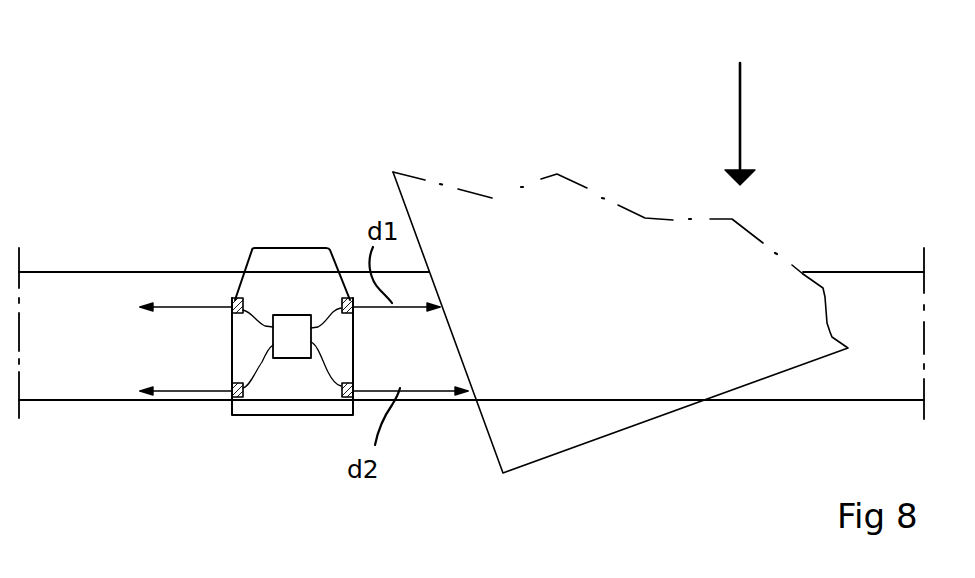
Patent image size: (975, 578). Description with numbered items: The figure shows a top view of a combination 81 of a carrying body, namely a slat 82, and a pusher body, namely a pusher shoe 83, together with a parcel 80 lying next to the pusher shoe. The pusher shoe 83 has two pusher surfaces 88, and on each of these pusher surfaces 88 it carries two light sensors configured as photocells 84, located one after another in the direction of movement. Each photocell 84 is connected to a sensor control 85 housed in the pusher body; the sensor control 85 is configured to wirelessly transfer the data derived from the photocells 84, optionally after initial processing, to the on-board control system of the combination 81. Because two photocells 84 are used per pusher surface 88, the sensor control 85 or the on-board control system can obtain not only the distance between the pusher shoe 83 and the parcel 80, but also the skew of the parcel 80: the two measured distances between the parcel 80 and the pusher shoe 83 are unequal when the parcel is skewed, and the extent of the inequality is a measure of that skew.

The parcel 80 is at (608, 323).
The combination 81 is at (187, 142).
The slat 82 is at (80, 300).
The pusher shoe 83 is at (292, 265).
The photocell 84 is at (240, 300).
The sensor control 85 is at (292, 352).
The pusher surfaces 88 is at (232, 345).